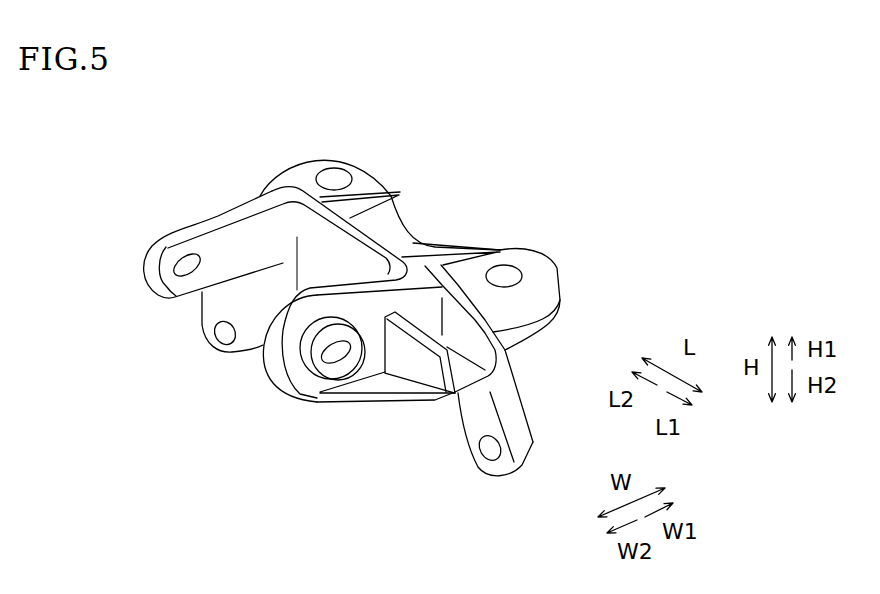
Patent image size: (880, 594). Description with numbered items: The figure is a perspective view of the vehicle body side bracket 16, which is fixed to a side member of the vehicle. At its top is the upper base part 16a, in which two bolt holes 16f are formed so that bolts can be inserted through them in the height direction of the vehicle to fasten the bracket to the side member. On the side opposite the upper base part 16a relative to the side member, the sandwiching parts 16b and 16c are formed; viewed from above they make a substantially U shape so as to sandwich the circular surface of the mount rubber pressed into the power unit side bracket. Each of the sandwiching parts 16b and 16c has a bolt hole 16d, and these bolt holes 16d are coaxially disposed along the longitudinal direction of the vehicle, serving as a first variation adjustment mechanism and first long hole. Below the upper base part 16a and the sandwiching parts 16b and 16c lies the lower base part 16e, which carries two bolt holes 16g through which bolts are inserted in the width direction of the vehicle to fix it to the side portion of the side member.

The vehicle body side bracket 16 is at (526, 141).
The upper base part 16a is at (413, 232).
The sandwiching part 16b is at (208, 222).
The sandwiching part 16c is at (353, 290).
The bolt hole 16d is at (182, 263).
The lower base part 16e is at (462, 413).
The bolt hole 16f is at (333, 190).
The bolt hole 16g is at (220, 337).